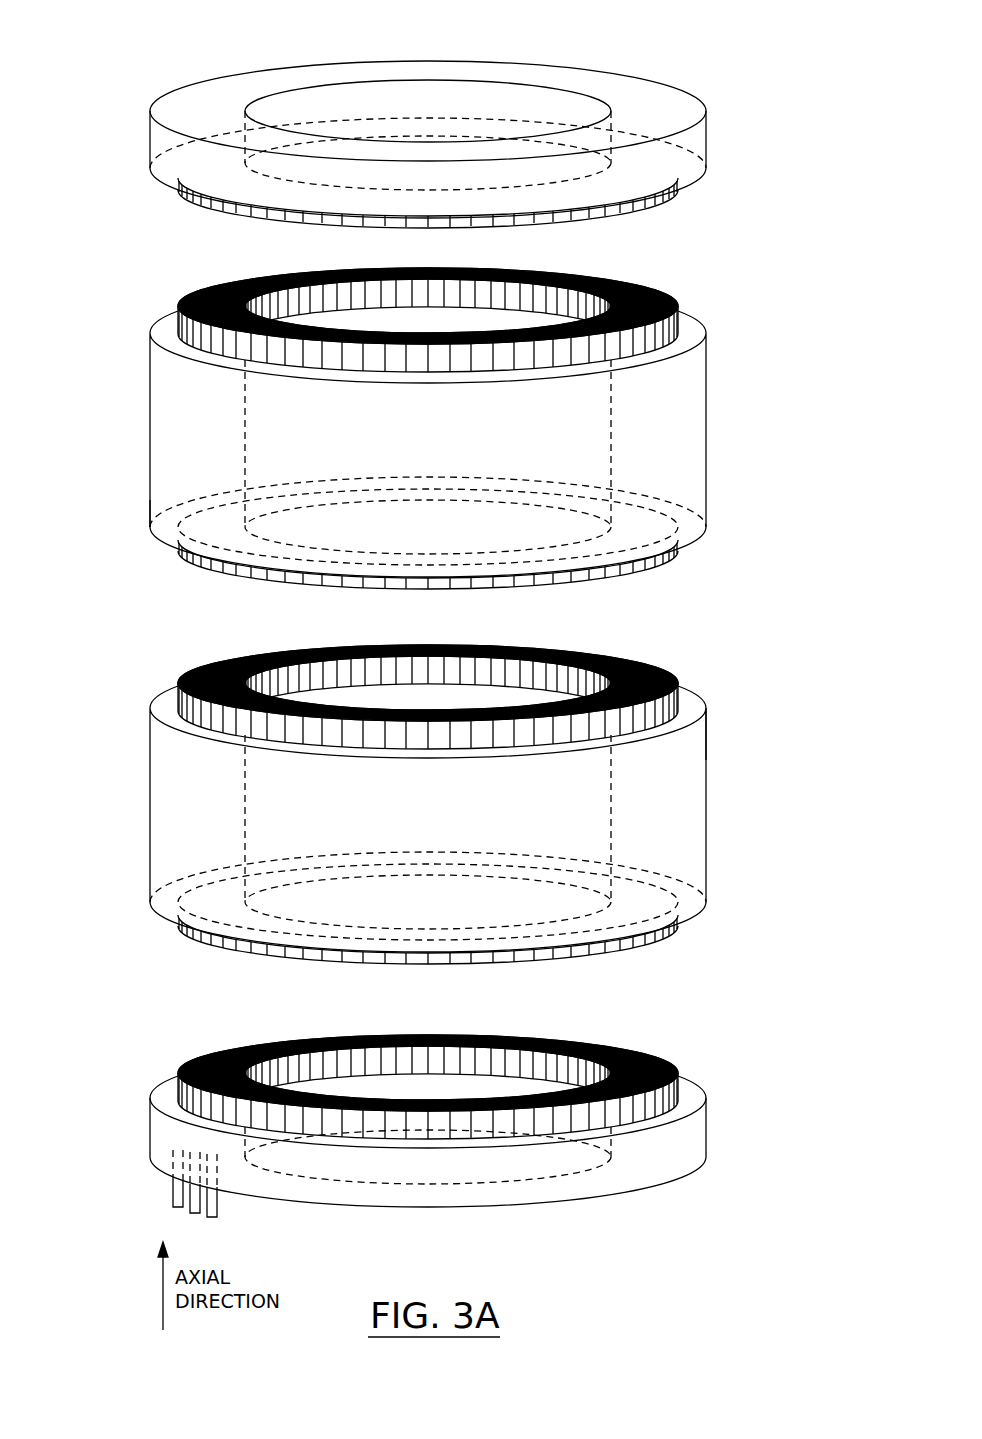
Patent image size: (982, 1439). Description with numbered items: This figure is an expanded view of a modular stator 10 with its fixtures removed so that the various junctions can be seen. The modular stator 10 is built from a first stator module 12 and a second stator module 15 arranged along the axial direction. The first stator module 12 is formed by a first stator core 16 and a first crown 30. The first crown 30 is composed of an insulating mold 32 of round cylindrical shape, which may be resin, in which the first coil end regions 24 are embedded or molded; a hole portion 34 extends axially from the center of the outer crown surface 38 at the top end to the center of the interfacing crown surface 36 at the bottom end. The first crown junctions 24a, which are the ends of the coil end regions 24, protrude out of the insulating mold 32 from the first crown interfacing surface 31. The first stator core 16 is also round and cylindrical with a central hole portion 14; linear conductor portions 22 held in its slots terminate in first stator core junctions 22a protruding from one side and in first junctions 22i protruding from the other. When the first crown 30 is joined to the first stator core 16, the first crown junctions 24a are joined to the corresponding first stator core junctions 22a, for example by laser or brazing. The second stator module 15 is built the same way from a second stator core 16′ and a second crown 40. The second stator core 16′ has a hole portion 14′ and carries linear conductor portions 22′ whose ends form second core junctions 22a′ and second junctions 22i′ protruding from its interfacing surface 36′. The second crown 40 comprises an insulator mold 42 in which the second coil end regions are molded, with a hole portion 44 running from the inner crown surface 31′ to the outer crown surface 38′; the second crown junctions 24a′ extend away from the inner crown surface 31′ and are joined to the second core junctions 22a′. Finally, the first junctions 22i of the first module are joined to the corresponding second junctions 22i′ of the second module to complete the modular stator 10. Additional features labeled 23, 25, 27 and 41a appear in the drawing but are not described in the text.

The modular stator 10 is at (792, 482).
The first stator module 12 is at (103, 53).
The hole portion 14 is at (334, 299).
The second stator module 15 is at (103, 645).
The first stator core 16 is at (148, 403).
The linear conductor portions 22 is at (670, 286).
The first stator core junctions 22a is at (660, 282).
The first junctions 22i is at (240, 580).
The teeth of end plate 23 is at (691, 212).
The first coil end regions 24 is at (686, 1048).
The first crown junctions 24a is at (583, 222).
The second stator assembly 25 is at (726, 664).
The lower teeth of stator core 27 is at (692, 575).
The first crown 30 is at (682, 66).
The first crown interfacing surface 31 is at (163, 180).
The insulating mold 32 is at (703, 97).
The hole portion 34 is at (517, 94).
The interfacing crown surface 36 is at (163, 540).
The outer crown surface 38 is at (600, 67).
The second crown 40 is at (727, 1150).
The outer surface of base plate 41a is at (705, 1128).
The insulator mold 42 is at (685, 1150).
The hole portion 44 is at (464, 1062).
The linear conductor portion 22′ is at (670, 660).
The second core junctions 22a′ is at (240, 958).
The second junctions 22i′ is at (662, 658).
The hole portion 14′ is at (335, 677).
The second stator core 16′ is at (148, 778).
The interfacing surface 36′ is at (702, 710).
The second crown junctions 24a′ is at (640, 1050).
The inner crown surface 31′ is at (163, 1097).
The outer crown surface 38′ is at (645, 1190).